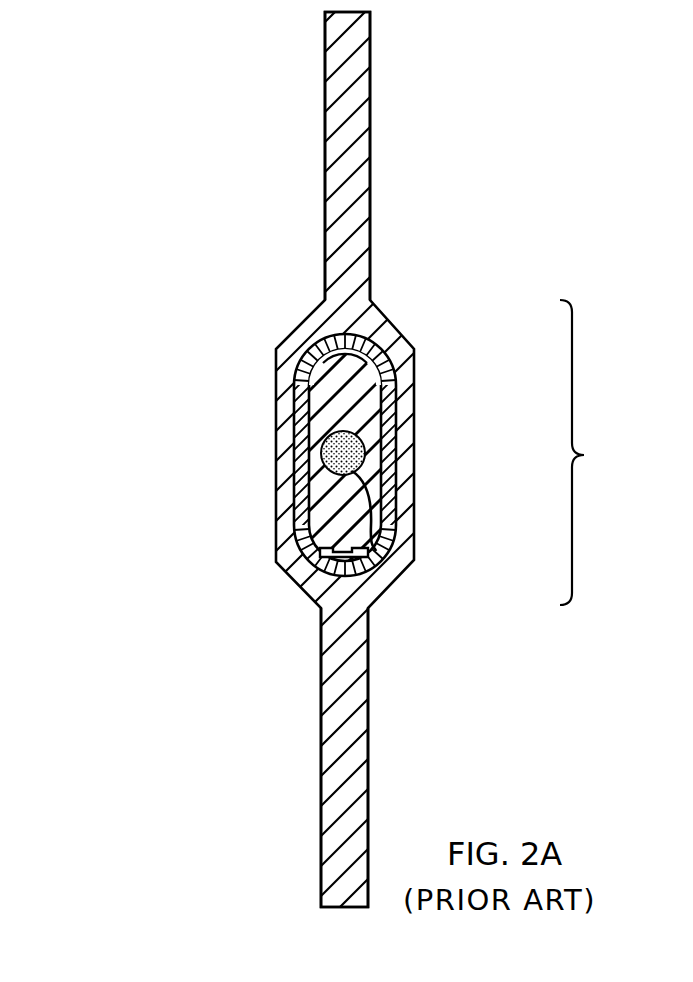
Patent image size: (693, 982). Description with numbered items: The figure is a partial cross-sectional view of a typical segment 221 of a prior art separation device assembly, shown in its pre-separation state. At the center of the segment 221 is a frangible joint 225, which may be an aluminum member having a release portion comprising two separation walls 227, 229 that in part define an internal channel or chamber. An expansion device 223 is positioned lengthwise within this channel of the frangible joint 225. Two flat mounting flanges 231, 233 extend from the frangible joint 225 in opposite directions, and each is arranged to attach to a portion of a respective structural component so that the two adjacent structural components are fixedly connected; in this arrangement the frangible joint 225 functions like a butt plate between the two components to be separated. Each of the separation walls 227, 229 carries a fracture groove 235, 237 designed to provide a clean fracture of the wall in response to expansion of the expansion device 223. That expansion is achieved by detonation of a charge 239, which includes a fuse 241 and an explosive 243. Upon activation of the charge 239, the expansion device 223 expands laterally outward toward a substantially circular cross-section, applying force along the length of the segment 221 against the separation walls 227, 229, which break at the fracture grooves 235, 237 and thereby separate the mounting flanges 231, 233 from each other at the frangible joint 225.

The segment 221 is at (371, 491).
The expansion device 223 is at (303, 510).
The frangible joint 225 is at (609, 452).
The separation wall 227 is at (293, 391).
The separation wall 229 is at (416, 431).
The mounting flange 231 is at (370, 152).
The mounting flange 233 is at (360, 712).
The fracture groove 235 is at (273, 461).
The fracture groove 237 is at (402, 461).
The charge 239 is at (390, 381).
The fuse 241 is at (385, 552).
The explosive 243 is at (347, 405).